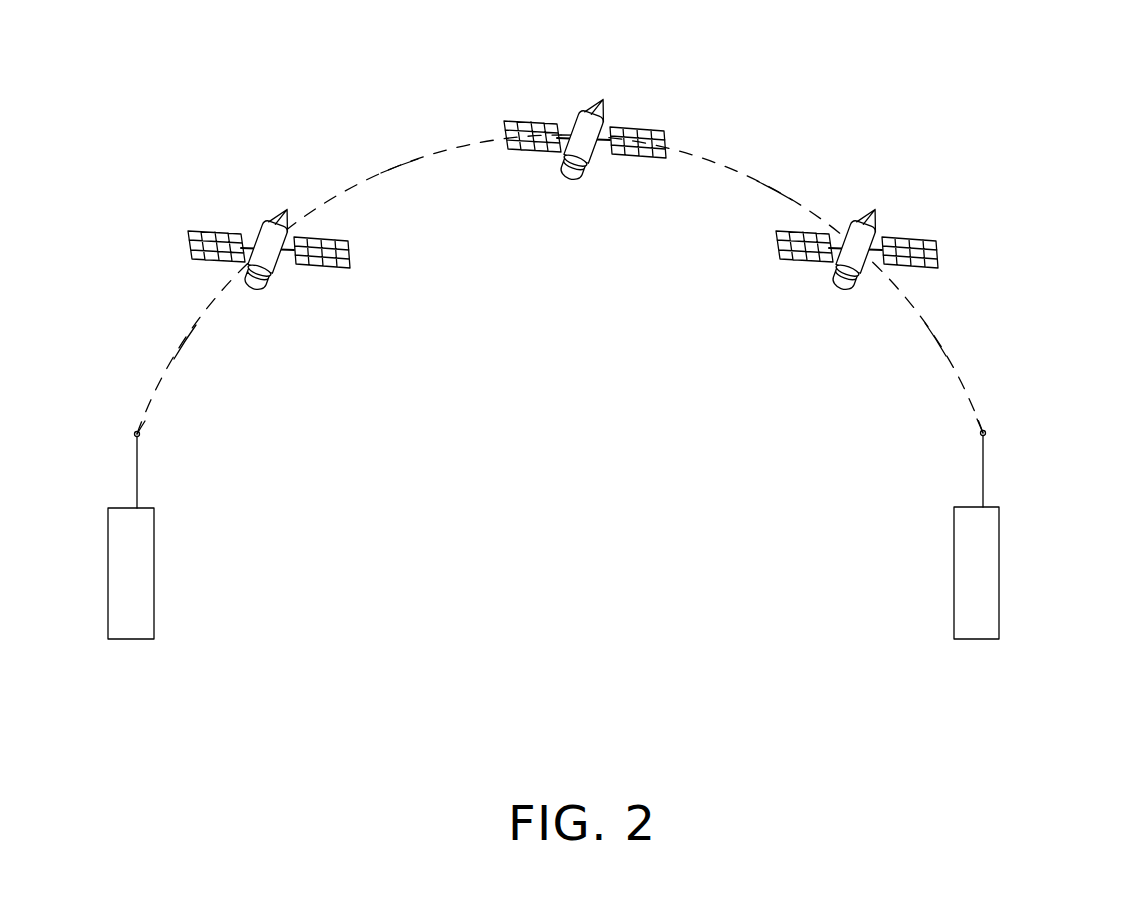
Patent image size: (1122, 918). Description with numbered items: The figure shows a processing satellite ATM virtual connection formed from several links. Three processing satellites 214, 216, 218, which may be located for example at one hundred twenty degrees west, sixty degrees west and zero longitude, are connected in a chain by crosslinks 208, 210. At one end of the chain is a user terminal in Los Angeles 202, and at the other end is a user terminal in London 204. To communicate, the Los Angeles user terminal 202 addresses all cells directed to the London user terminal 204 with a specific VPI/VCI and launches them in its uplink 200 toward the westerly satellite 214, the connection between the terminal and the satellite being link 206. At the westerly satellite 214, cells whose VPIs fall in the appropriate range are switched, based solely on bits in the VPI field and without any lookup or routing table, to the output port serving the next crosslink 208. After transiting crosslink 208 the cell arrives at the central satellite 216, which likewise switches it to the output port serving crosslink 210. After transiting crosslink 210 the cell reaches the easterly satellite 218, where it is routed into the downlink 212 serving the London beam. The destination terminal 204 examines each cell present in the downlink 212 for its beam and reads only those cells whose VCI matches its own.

The uplink 200 is at (1003, 75).
The user terminal in Los Angeles 202 is at (154, 596).
The user terminal in London 204 is at (999, 588).
The communication link 206 is at (185, 342).
The crosslink 208 is at (398, 163).
The crosslink 210 is at (775, 190).
The downlink 212 is at (935, 340).
The westerly satellite 214 is at (253, 288).
The central satellite 216 is at (569, 178).
The easterly satellite 218 is at (841, 288).